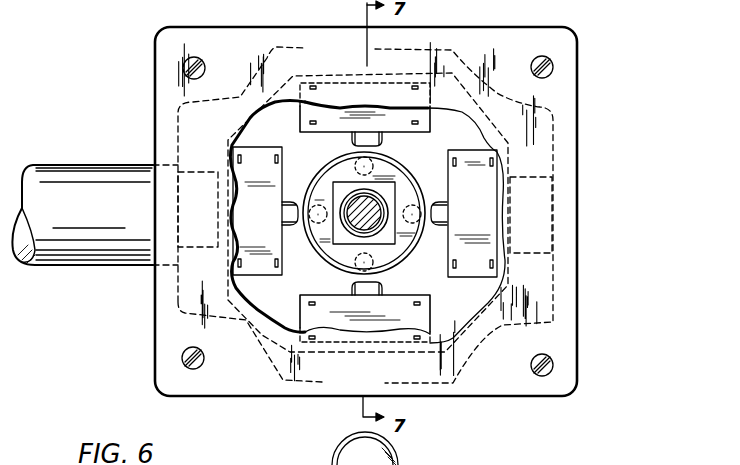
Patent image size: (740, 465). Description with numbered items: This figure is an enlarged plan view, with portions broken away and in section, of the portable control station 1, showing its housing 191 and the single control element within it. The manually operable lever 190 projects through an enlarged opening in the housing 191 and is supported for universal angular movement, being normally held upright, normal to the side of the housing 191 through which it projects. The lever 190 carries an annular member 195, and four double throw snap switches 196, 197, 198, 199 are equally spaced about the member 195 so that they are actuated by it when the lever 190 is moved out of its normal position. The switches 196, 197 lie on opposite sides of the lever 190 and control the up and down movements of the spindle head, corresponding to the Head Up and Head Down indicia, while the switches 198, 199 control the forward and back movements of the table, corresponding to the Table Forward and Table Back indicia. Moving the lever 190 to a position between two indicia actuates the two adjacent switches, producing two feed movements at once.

The movable control station 1 is at (581, 187).
The housing 191 is at (562, 352).
The manually operable lever 190 is at (378, 205).
The annular member 195 is at (331, 172).
The double throw snap switch 196 is at (343, 118).
The double throw snap switch 197 is at (429, 277).
The double throw snap switch 198 is at (448, 163).
The double throw snap switch 199 is at (272, 247).